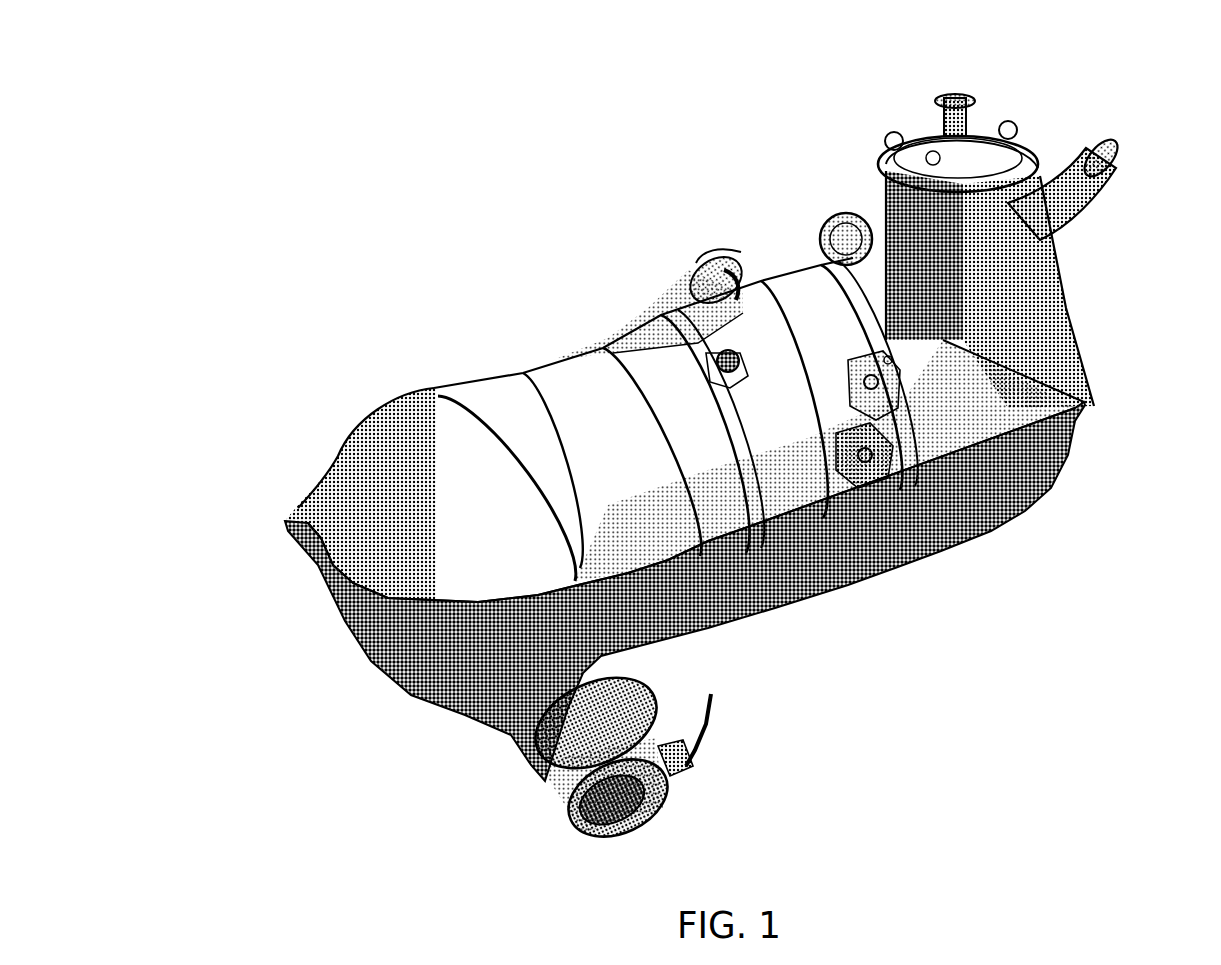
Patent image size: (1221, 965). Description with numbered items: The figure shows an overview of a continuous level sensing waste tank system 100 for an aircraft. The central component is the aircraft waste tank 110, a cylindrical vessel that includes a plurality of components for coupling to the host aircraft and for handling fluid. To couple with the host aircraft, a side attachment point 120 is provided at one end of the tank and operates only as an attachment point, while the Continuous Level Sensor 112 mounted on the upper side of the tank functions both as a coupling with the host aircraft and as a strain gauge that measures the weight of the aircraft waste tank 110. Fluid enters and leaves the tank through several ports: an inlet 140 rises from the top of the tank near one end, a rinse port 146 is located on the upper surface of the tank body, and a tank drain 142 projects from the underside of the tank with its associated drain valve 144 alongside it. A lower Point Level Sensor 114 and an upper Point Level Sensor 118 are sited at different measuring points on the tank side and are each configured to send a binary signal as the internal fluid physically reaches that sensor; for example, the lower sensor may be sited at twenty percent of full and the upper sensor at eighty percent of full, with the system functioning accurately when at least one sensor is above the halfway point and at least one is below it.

The exhaust aftertreatment system 100 is at (88, 97).
The aircraft waste tank 110 is at (397, 422).
The Continuous Level Sensor (CLS) 112 is at (716, 268).
The lower Point Level Sensor (PLS) 114 is at (857, 447).
The upper Point Level Sensor (PLS) 118 is at (864, 374).
The side attachment point 120 is at (288, 492).
The inlet 140 is at (1112, 159).
The tank drain 142 is at (656, 788).
The drain valve 144 is at (705, 688).
The rinse port 146 is at (716, 342).